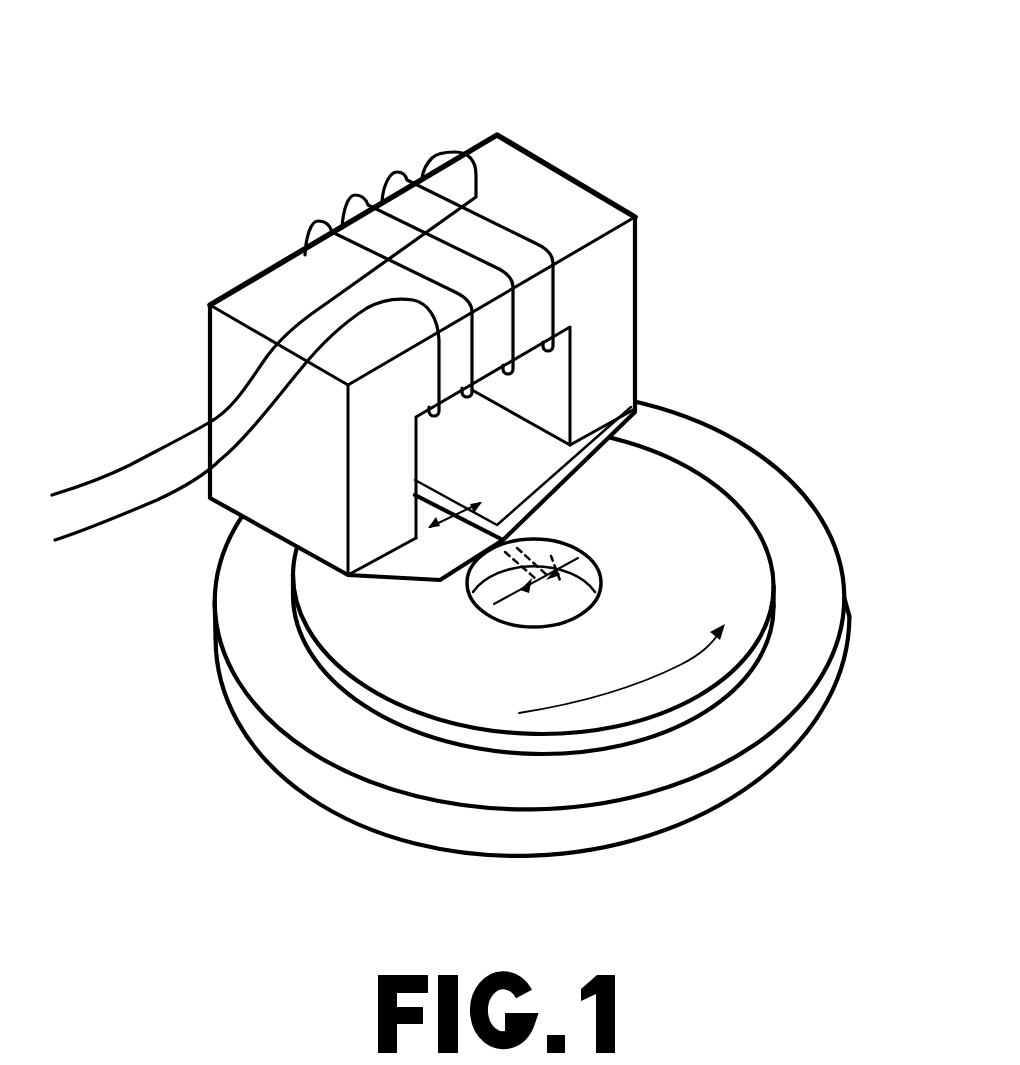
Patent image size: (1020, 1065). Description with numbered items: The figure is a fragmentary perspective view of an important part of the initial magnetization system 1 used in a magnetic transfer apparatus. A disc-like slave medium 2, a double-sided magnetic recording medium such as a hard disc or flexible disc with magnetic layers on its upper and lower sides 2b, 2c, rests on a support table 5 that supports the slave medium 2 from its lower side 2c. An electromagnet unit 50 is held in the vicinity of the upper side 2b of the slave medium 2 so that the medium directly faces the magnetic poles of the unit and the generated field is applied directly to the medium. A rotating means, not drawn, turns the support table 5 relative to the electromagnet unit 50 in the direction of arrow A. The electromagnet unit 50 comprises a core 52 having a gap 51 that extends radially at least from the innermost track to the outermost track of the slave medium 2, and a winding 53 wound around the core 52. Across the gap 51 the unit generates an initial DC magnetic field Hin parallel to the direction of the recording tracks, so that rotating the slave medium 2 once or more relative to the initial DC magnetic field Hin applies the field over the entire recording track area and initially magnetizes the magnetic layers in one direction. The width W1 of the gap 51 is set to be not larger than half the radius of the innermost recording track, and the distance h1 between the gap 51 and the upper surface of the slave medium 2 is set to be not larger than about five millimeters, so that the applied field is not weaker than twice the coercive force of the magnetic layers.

The initial magnetization system 1 is at (83, 180).
The slave medium 2 is at (722, 525).
The upper side 2b is at (323, 620).
The lower side 2c is at (359, 711).
The support table 5 is at (813, 564).
The electromagnet unit 50 is at (630, 157).
The gap 51 is at (440, 500).
The core 52 is at (617, 307).
The winding 53 is at (397, 173).
The direction of rotation A is at (690, 700).
The distance between gap and upper surface of slave medium h1 is at (498, 538).
The initial DC magnetic field Hin is at (465, 517).
The width of gap W1 is at (548, 568).